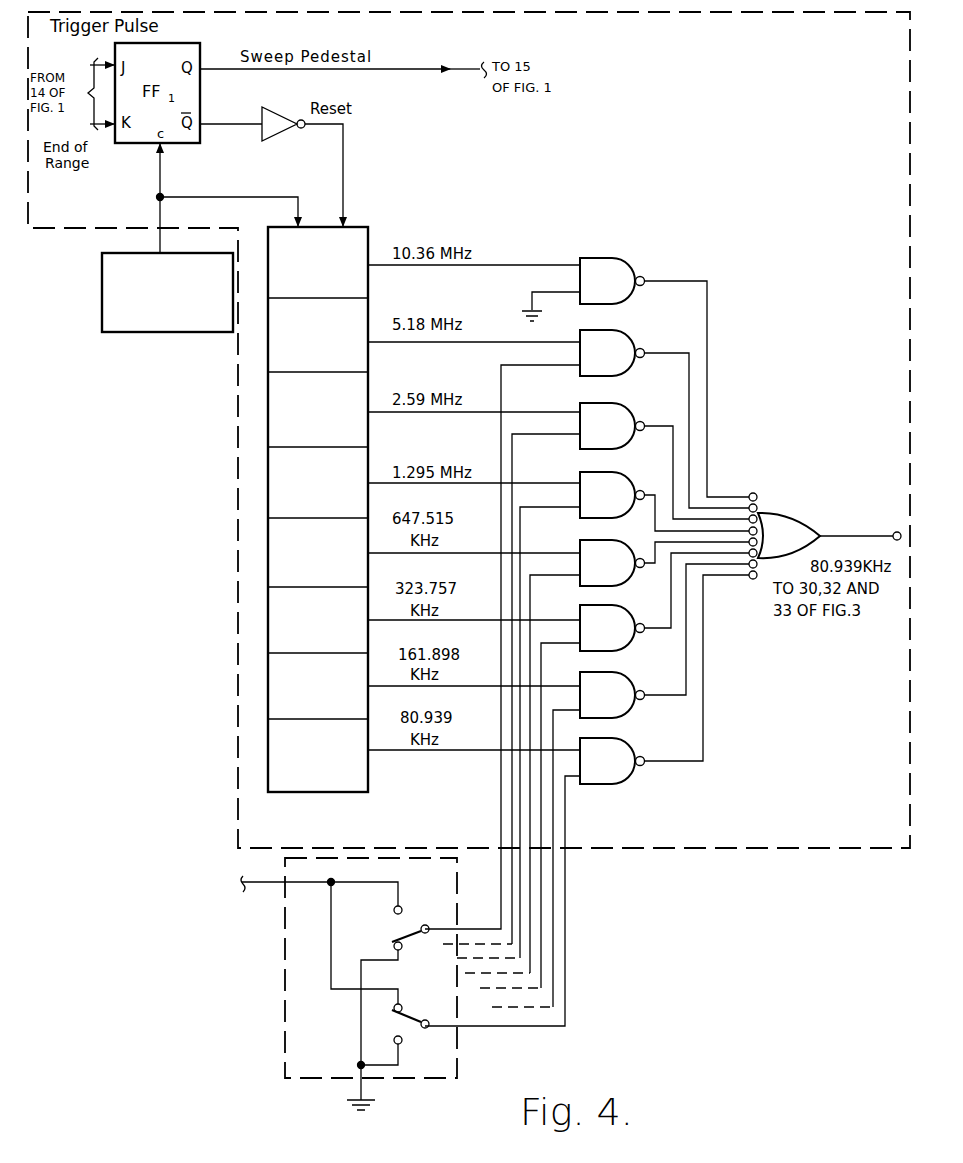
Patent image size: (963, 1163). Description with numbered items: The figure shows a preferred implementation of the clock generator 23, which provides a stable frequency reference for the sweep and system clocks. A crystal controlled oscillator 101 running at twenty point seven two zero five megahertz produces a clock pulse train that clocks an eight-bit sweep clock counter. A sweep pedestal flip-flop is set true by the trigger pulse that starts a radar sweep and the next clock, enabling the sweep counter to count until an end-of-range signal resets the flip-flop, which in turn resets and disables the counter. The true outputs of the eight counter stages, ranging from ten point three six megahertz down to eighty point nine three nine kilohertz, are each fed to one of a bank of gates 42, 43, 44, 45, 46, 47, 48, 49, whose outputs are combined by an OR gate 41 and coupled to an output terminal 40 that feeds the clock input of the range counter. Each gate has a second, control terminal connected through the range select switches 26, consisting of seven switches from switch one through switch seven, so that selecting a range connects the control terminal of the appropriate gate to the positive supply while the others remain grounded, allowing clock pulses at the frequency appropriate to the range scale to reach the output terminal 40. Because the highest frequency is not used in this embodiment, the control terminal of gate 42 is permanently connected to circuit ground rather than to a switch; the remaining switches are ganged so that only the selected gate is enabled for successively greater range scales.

The crystal controlled oscillator 101 is at (102, 316).
The clock generator 23 is at (238, 750).
The range select switches 26 is at (285, 1050).
The output terminal 40 is at (897, 531).
The OR gate 41 is at (788, 520).
The AND gate 42 is at (628, 266).
The AND gate 43 is at (628, 339).
The AND gate 44 is at (628, 412).
The AND gate 45 is at (628, 482).
The AND gate 46 is at (622, 548).
The AND gate 47 is at (628, 616).
The AND gate 48 is at (628, 682).
The AND gate 49 is at (628, 748).